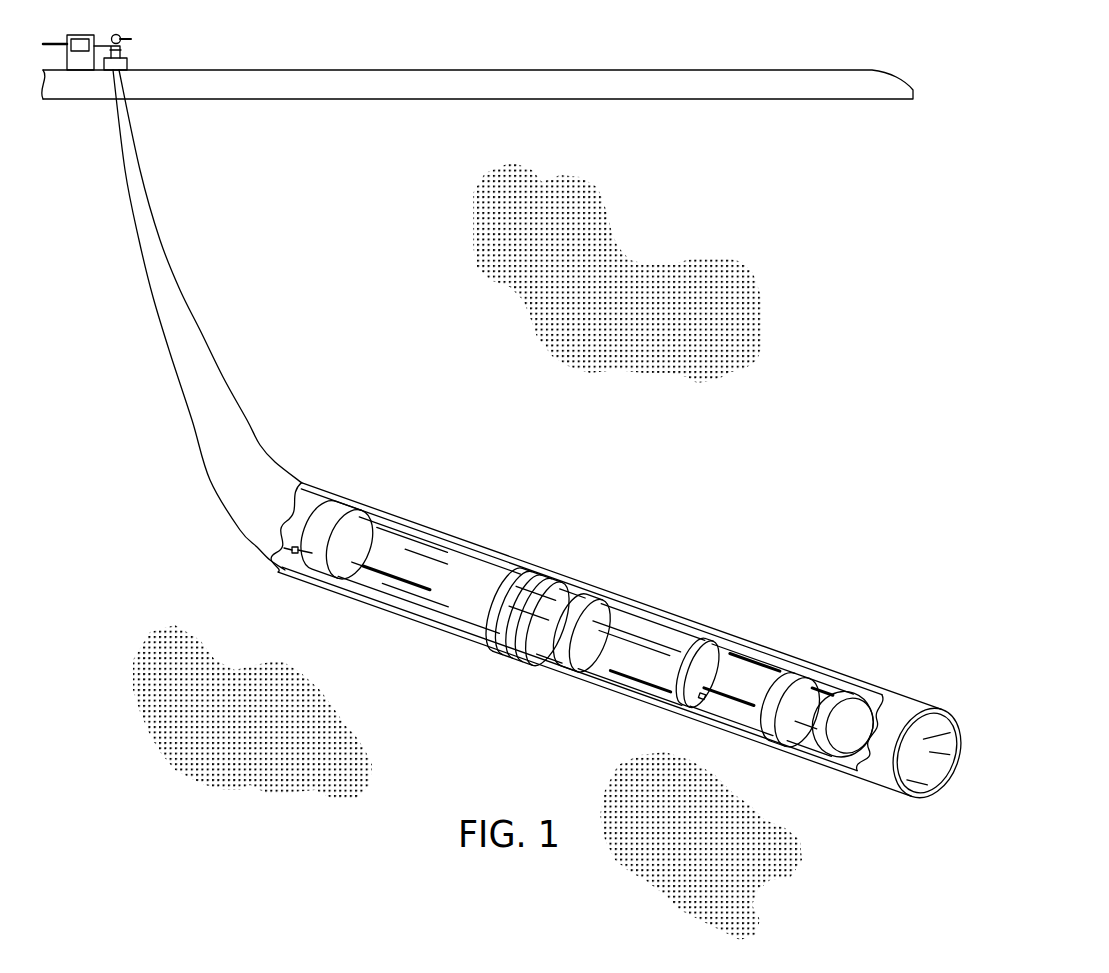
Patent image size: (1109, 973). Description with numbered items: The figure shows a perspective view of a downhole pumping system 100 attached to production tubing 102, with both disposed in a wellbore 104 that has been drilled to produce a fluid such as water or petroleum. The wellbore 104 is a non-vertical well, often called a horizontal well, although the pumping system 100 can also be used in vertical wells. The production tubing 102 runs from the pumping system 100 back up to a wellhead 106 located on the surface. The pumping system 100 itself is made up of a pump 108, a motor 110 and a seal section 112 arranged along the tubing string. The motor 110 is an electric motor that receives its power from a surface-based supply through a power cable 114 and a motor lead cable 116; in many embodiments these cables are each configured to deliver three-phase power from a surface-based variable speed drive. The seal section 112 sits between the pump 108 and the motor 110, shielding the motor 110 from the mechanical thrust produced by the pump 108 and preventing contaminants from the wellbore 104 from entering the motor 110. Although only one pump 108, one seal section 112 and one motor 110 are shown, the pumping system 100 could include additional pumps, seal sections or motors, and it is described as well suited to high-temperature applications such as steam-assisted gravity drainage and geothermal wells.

The downhole pumping system 100 is at (587, 593).
The production tubing 102 is at (298, 515).
The wellbore 104 is at (260, 445).
The wellhead 106 is at (127, 62).
The pump 108 is at (480, 570).
The motor 110 is at (765, 675).
The seal section 112 is at (624, 618).
The power cable 114 is at (282, 547).
The motor lead cable 116 is at (472, 612).